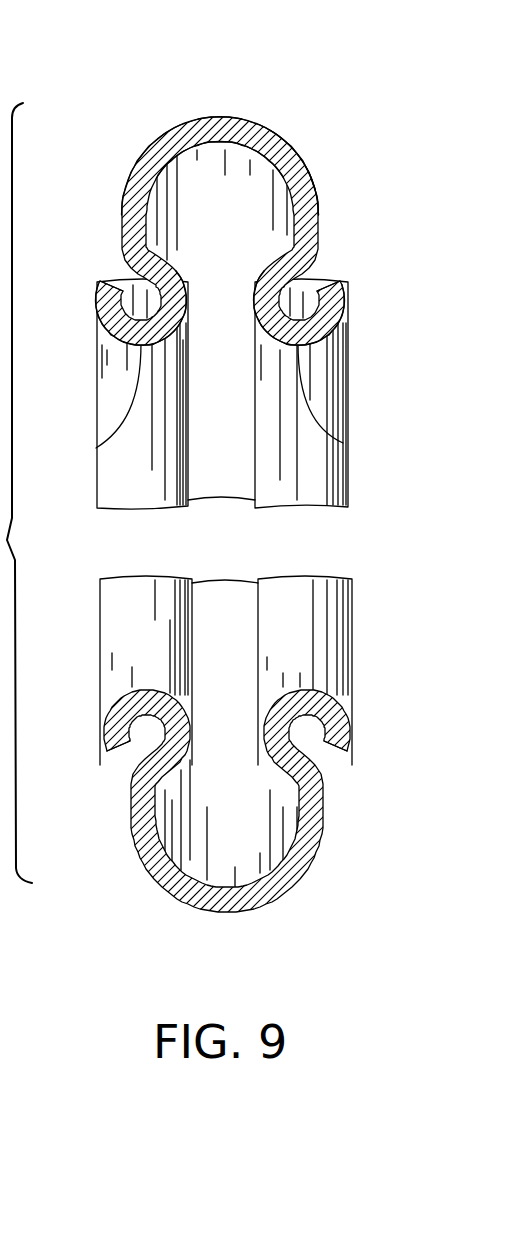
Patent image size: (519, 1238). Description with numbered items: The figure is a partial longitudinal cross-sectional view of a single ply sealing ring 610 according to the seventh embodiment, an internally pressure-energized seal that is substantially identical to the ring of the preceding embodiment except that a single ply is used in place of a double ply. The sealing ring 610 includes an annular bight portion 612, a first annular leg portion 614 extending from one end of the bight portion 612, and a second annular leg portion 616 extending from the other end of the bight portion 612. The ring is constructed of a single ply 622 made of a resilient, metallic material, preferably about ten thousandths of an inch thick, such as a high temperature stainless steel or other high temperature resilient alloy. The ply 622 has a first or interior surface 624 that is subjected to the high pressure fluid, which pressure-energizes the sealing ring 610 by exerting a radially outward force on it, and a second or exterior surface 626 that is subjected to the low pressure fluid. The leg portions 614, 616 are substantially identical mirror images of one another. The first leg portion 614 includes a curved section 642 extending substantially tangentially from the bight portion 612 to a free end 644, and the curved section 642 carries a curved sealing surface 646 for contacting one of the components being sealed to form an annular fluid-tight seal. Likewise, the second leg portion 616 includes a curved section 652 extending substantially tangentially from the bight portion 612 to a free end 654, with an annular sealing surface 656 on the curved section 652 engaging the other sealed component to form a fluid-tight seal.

The single ply sealing ring 610 is at (268, 107).
The annular bight portion 612 is at (192, 116).
The first annular leg portion 614 is at (101, 400).
The second annular leg portion 616 is at (344, 401).
The single ply 622 is at (296, 146).
The interior surface 624 is at (281, 165).
The exterior surface 626 is at (313, 186).
The curved section 642 is at (96, 448).
The free end 644 is at (116, 268).
The curved sealing surface 646 is at (95, 303).
The curved section 652 is at (343, 443).
The free end 654 is at (323, 277).
The annular sealing surface 656 is at (343, 306).